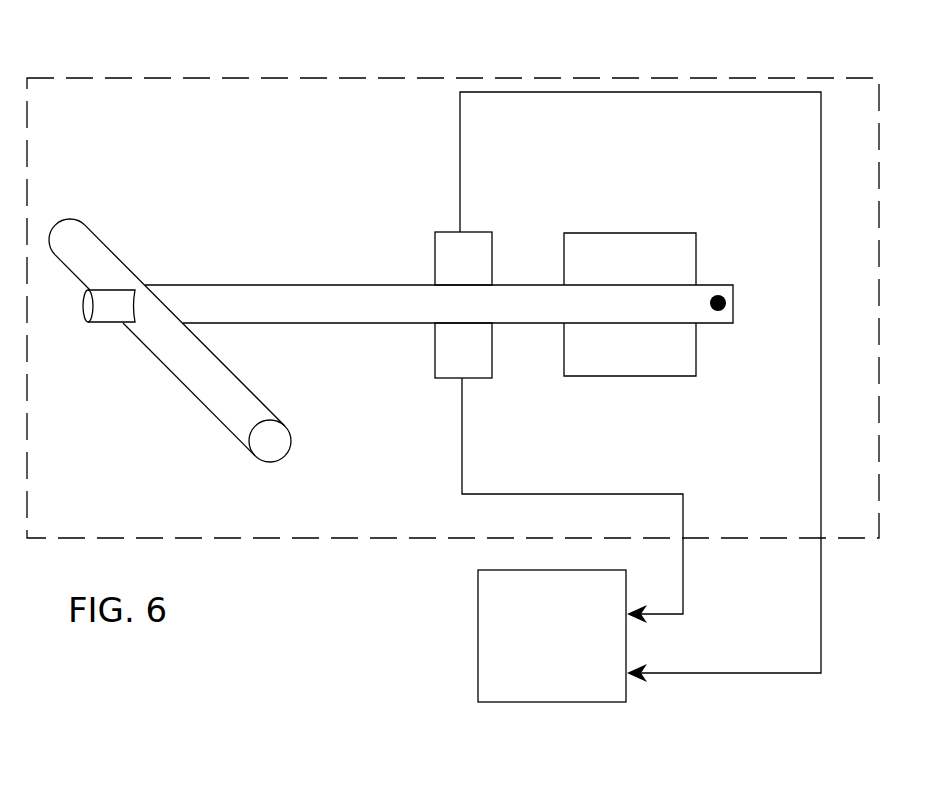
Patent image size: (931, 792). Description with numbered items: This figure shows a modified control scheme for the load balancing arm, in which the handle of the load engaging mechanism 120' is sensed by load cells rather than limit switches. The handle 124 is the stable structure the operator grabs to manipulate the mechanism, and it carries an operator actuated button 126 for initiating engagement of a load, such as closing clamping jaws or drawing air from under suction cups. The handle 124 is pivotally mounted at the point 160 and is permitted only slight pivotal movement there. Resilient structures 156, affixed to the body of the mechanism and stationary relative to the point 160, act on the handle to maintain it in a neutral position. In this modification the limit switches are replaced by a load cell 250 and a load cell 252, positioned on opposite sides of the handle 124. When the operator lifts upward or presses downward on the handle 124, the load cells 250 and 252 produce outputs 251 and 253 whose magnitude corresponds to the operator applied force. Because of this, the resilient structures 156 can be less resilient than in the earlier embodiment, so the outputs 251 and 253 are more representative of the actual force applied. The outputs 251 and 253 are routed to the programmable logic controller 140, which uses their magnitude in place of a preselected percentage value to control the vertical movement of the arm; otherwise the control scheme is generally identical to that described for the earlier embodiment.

The load engaging mechanism 120' is at (453, 283).
The handle 124 is at (99, 263).
The operator actuated button 126 is at (87, 322).
The programmable logic controller 140 is at (566, 643).
The resilient structure 156 is at (637, 233).
The point 160 is at (728, 301).
The load cell 250 is at (435, 262).
The output 251 is at (460, 137).
The load cell 252 is at (435, 347).
The output 253 is at (481, 494).